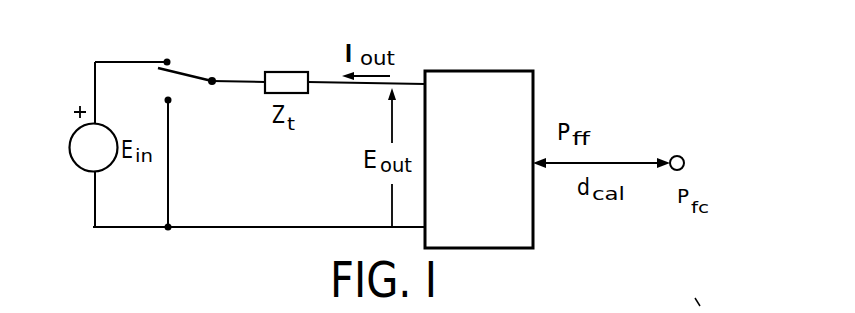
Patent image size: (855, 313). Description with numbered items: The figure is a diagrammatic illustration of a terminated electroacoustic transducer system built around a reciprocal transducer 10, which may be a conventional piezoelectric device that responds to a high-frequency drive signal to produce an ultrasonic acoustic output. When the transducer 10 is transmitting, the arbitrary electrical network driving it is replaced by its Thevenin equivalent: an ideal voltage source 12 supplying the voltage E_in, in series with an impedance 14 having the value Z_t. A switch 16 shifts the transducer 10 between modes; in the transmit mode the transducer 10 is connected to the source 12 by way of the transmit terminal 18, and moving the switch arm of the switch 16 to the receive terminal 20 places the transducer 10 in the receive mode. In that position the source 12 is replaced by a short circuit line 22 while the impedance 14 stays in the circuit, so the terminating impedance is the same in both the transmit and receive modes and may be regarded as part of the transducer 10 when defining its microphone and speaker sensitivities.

The reciprocal transducer 10 is at (522, 103).
The ideal voltage source 12 is at (79, 153).
The series impedance 14 is at (278, 72).
The switch 16 is at (216, 58).
The transmit terminal 18 is at (167, 58).
The receive terminal 20 is at (165, 96).
The short circuit line 22 is at (170, 186).